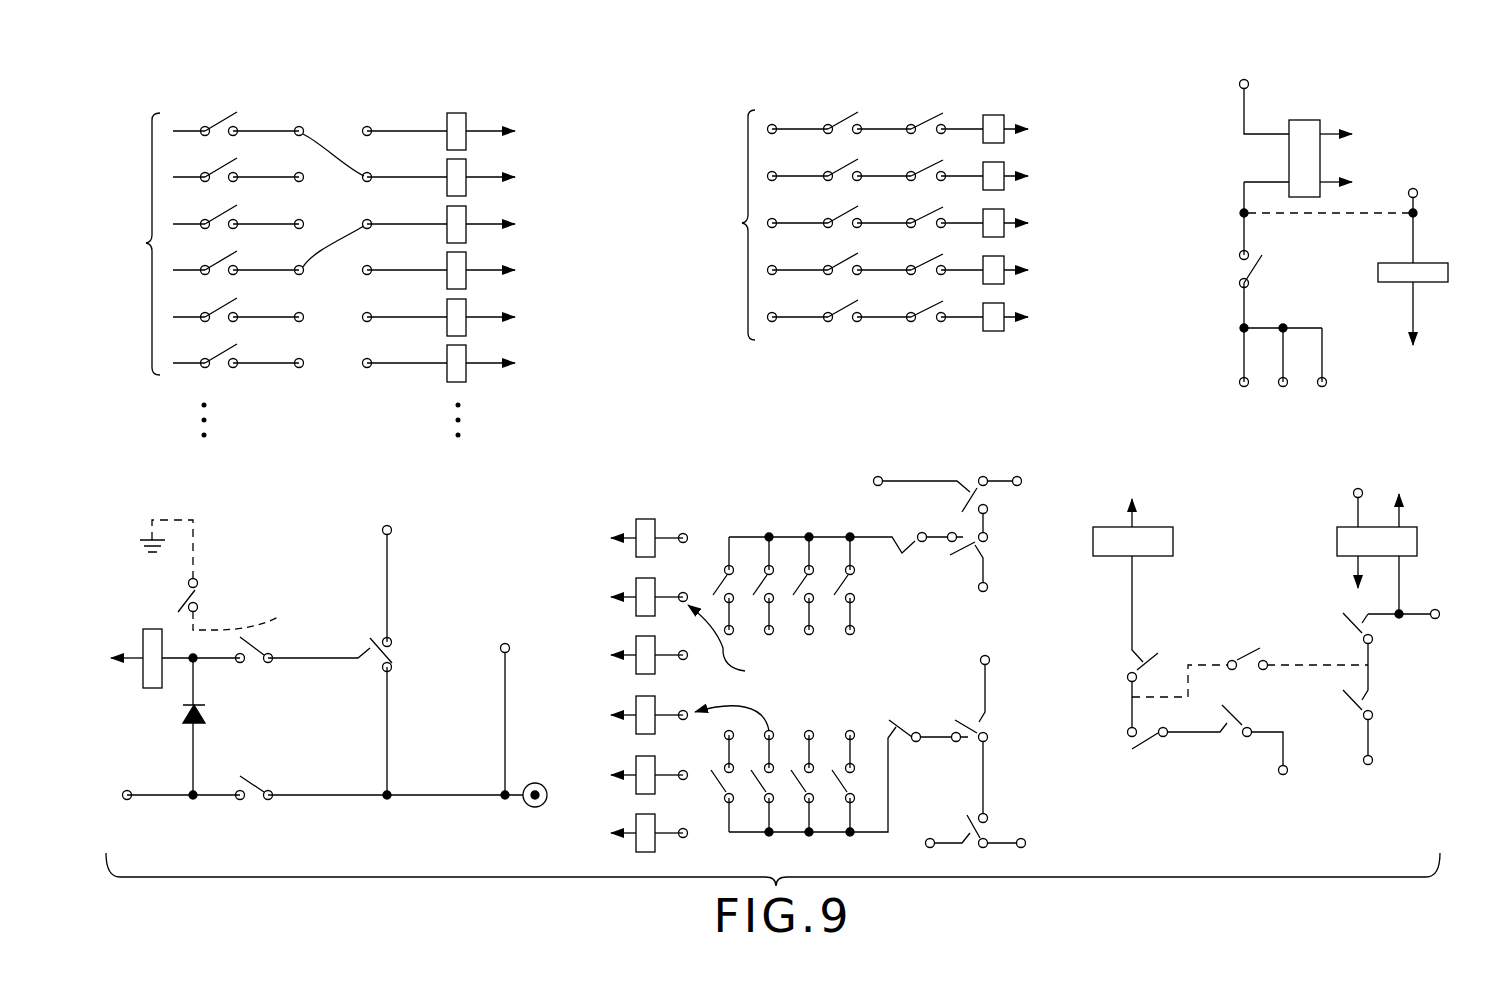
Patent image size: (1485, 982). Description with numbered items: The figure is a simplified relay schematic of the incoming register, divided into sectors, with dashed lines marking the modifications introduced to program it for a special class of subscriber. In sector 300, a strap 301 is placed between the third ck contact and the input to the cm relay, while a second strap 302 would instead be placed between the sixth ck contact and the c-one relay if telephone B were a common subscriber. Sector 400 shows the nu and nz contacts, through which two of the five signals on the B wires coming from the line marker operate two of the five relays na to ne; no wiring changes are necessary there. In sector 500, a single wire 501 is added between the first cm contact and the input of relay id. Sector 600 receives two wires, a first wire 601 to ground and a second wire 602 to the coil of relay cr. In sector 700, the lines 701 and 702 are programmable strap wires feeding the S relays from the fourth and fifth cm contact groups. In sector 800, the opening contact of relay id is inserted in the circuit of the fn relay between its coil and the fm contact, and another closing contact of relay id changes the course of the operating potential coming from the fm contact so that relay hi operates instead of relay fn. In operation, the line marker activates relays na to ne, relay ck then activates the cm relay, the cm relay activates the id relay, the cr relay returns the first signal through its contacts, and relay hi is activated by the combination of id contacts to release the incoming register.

The sector 300 is at (355, 110).
The strap 301 is at (337, 150).
The strap 302 is at (338, 244).
The sector 400 is at (887, 84).
The sector 500 is at (1371, 116).
The wire 501 is at (1362, 213).
The sector 600 is at (274, 550).
The first wire 601 is at (168, 502).
The second wire 602 is at (258, 616).
The sector 700 is at (908, 626).
The programmable strap wire 701 is at (737, 643).
The programmable strap wire 702 is at (745, 708).
The sector 800 is at (1257, 565).